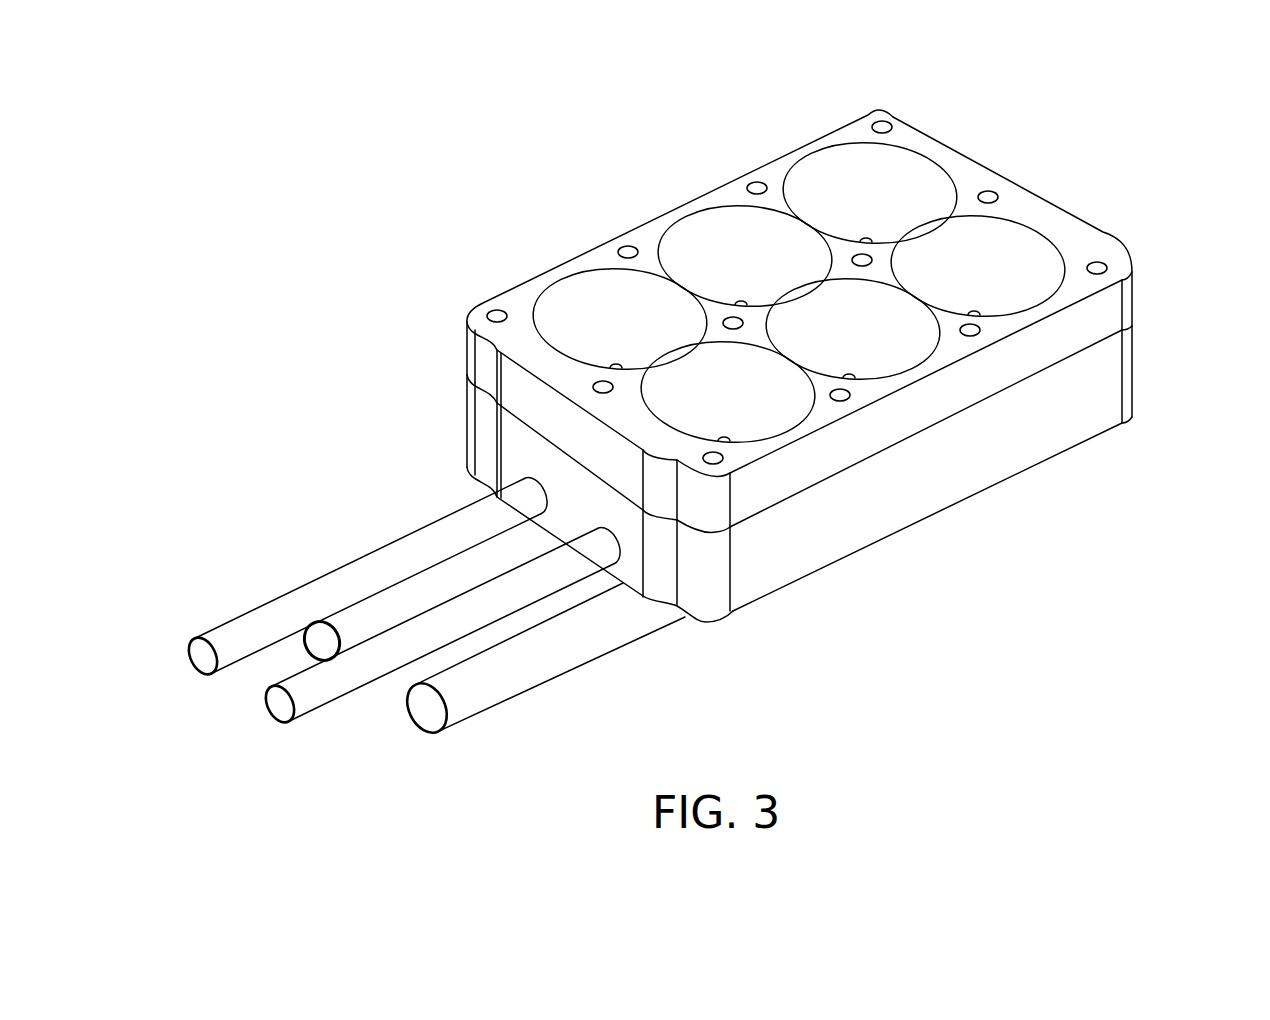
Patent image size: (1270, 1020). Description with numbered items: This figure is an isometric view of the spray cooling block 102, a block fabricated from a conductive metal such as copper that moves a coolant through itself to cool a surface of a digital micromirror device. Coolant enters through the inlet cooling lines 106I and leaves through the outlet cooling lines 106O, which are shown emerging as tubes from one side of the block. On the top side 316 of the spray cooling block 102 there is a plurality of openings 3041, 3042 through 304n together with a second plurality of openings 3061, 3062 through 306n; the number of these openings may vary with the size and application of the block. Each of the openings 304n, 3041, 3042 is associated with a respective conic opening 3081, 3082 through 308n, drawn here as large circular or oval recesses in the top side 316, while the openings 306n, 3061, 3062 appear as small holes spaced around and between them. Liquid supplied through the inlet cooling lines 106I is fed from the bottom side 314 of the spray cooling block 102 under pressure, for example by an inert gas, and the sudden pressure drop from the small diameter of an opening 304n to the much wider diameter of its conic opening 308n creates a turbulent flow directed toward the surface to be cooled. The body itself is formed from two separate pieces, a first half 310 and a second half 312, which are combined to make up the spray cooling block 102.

The spray cooling block 102 is at (700, 423).
The opening 304n is at (618, 366).
The opening 3041 is at (868, 240).
The opening 3042 is at (976, 313).
The opening 306n is at (491, 311).
The opening 3061 is at (879, 123).
The opening 3062 is at (991, 192).
The conic opening 308n is at (598, 287).
The conic opening 3081 is at (831, 168).
The conic opening 3082 is at (1053, 260).
The first half 310 is at (1133, 309).
The second half 312 is at (1133, 387).
The bottom side 314 is at (902, 536).
The top side 316 is at (713, 197).
The outlet cooling line 106O is at (203, 656).
The inlet cooling line 106I is at (322, 641).